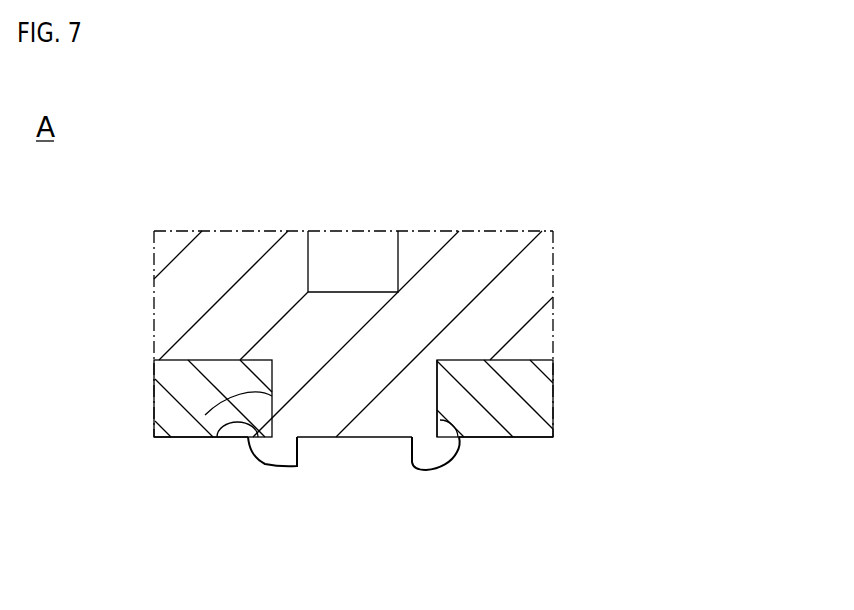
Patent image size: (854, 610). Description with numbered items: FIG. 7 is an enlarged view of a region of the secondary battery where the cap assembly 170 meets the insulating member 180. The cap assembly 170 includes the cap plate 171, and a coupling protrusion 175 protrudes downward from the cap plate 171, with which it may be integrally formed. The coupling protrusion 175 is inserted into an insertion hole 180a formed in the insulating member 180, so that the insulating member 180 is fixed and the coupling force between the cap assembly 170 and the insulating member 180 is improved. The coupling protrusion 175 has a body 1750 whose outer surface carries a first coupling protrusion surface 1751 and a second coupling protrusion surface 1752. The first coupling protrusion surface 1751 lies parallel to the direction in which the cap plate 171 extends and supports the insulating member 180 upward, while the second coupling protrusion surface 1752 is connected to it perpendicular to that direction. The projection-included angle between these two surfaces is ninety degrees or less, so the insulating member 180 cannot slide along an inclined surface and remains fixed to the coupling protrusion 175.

The cap assembly 170 is at (489, 222).
The cap plate 171 is at (337, 330).
The insulating member 180 is at (545, 413).
The insertion hole 180a is at (437, 378).
The coupling protrusion 175 is at (288, 491).
The body 1750 is at (270, 455).
The first coupling protrusion surface 1751 is at (217, 437).
The second coupling protrusion surface 1752 is at (194, 465).